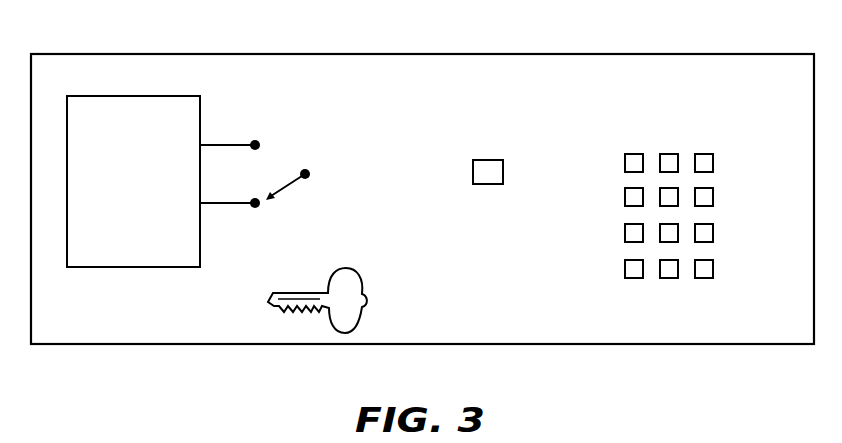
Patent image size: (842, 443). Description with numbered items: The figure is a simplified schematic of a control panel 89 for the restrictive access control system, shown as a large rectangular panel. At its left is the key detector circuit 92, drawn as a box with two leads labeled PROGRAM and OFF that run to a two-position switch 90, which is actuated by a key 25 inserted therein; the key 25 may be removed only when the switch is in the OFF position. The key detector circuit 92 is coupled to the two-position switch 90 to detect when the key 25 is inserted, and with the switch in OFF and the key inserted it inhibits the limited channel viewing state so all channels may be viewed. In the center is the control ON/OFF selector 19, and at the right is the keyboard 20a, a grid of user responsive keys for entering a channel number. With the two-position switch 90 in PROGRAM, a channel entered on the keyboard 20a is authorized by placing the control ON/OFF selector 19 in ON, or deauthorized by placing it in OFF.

The control panel 89 is at (558, 54).
The key detector circuit 92 is at (154, 226).
The 2-position switch 90 is at (289, 187).
The control ON/OFF selector 19 is at (487, 184).
The keyboard 20a is at (714, 145).
The key 25 is at (364, 315).